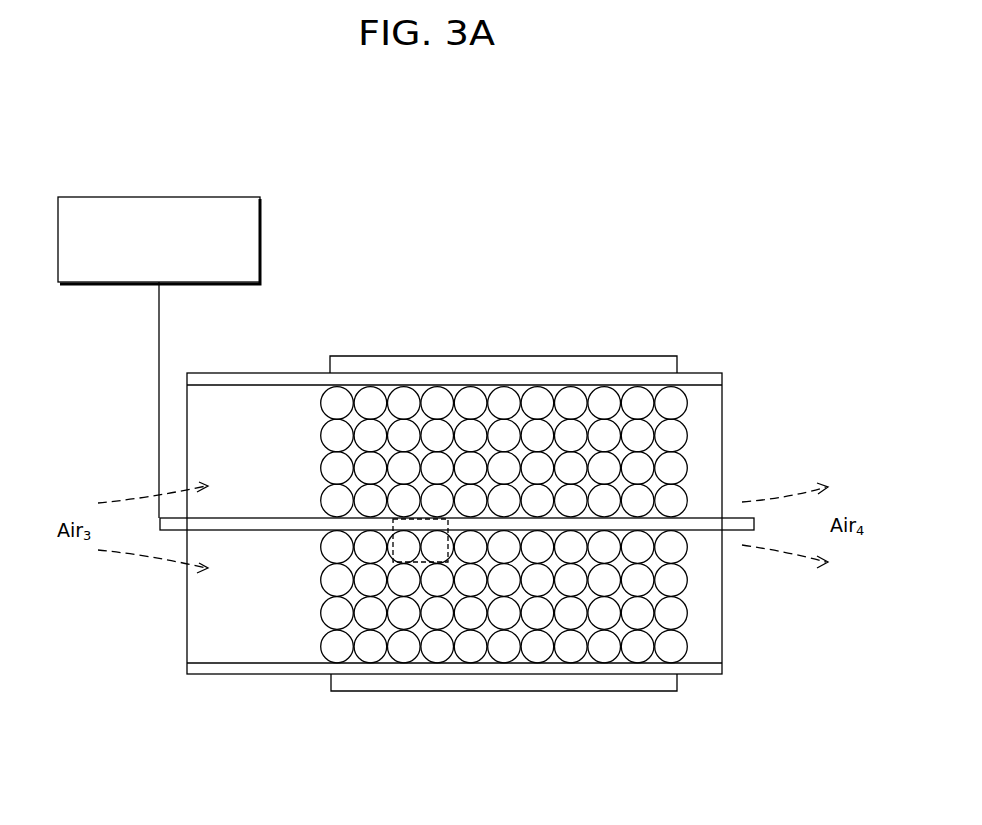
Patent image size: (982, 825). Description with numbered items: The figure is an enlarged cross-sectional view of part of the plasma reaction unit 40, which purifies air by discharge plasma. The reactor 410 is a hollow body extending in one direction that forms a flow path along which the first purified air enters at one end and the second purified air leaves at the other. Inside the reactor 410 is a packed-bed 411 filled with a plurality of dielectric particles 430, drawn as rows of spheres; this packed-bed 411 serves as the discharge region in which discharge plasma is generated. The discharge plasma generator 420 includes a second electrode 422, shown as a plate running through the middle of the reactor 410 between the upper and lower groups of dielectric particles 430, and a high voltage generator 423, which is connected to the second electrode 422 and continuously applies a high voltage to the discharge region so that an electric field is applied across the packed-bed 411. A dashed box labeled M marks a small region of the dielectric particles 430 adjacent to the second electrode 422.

The plasma reaction unit 40 is at (408, 460).
The reactor 410 is at (232, 668).
The packed-bed 411 is at (665, 368).
The discharge plasma generator 420 is at (406, 460).
The second electrode 422 is at (588, 523).
The high voltage generator 423 is at (262, 231).
The dielectric particles 430 is at (470, 648).
The enlarged region M is at (422, 519).